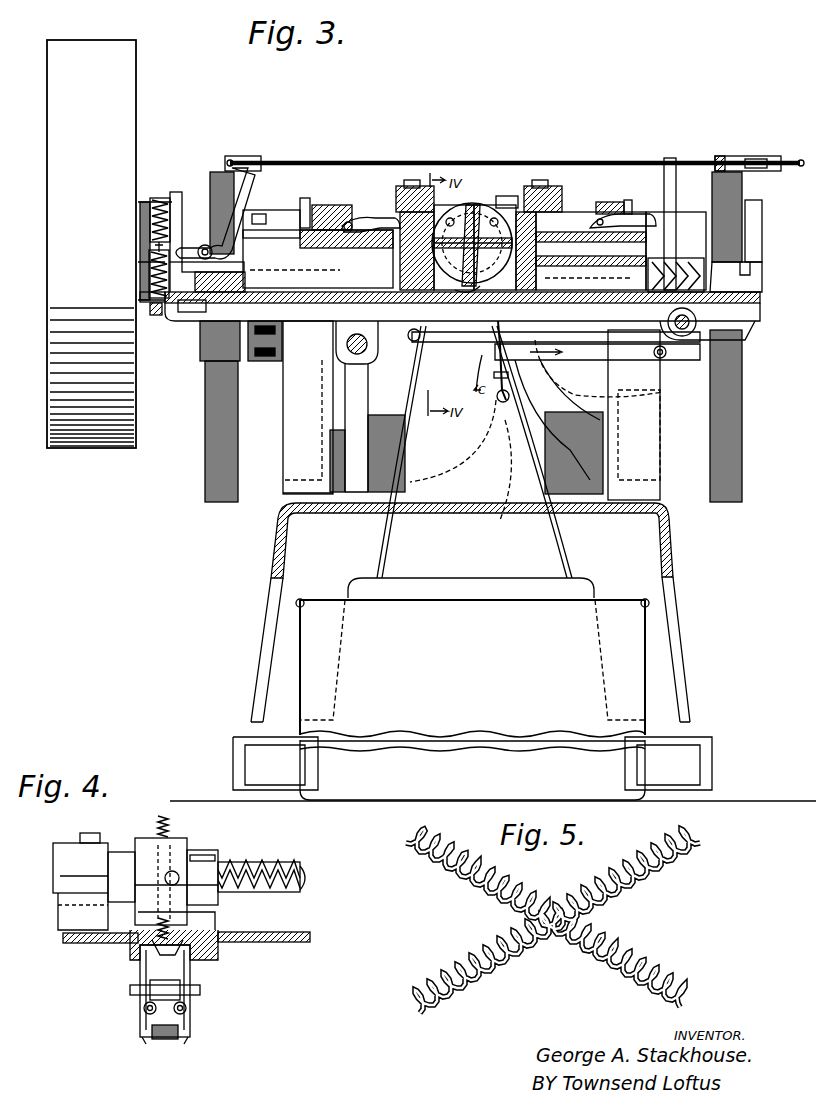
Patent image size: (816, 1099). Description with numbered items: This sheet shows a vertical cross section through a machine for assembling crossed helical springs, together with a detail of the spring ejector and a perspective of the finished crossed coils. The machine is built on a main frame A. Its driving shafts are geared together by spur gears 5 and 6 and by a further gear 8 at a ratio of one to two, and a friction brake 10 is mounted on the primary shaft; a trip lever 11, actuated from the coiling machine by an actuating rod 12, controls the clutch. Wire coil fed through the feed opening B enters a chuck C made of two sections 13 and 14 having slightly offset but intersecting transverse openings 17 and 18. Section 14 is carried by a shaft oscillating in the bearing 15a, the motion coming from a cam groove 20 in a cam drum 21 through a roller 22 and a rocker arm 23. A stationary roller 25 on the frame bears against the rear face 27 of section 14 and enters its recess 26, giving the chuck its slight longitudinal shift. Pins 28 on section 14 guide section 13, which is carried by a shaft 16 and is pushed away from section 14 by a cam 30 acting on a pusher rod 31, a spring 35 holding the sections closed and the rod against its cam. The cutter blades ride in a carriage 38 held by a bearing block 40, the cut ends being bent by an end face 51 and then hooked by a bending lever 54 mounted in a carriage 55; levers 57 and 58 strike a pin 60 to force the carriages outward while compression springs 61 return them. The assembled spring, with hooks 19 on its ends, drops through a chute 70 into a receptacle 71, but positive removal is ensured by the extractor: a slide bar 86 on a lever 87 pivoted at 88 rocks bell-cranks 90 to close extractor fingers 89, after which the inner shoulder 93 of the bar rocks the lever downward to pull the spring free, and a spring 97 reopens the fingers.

In FIG. 3, the spur gear 5 is at (208, 170).
In FIG. 3, the spur gear 6 is at (205, 470).
In FIG. 3, the gear 8 is at (742, 204).
In FIG. 3, the friction brake 10 is at (152, 205).
In FIG. 3, the trip lever 11 is at (176, 190).
In FIG. 3, the actuating rod 12 is at (380, 163).
In FIG. 4, the chuck section 13 is at (185, 888).
In FIG. 4, the chuck section 14 is at (140, 840).
In FIG. 4, the bearing 15a is at (78, 877).
In FIG. 4, the shaft 16 is at (306, 886).
In FIG. 3, the transverse opening 17 is at (500, 228).
In FIG. 4, the transverse opening 17 is at (162, 830).
In FIG. 3, the transverse opening 18 is at (482, 205).
In FIG. 4, the transverse opening 18 is at (178, 870).
In FIG. 5, the hook 19 is at (685, 990).
In FIG. 3, the cam groove 20 is at (510, 480).
In FIG. 3, the cam drum 21 is at (400, 500).
In FIG. 3, the roller 22 is at (545, 315).
In FIG. 3, the rocker arm 23 is at (478, 330).
In FIG. 4, the roller 25 is at (130, 935).
In FIG. 4, the recess 26 is at (135, 945).
In FIG. 4, the rear face 27 is at (128, 850).
In FIG. 3, the pins 28 is at (458, 205).
In FIG. 4, the pins 28 is at (205, 852).
In FIG. 3, the cam 30 is at (350, 452).
In FIG. 3, the pusher rod 31 is at (348, 352).
In FIG. 4, the spring 35 is at (298, 890).
In FIG. 3, the carriage 38 is at (372, 330).
In FIG. 3, the bearing block 40 is at (415, 188).
In FIG. 3, the end face 51 is at (621, 251).
In FIG. 3, the bending lever 54 is at (372, 210).
In FIG. 3, the carriage 55 is at (287, 261).
In FIG. 3, the lever 57 is at (312, 210).
In FIG. 3, the lever 58 is at (598, 240).
In FIG. 3, the pin 60 is at (318, 200).
In FIG. 3, the compression spring 61 is at (705, 255).
In FIG. 3, the chute 70 is at (388, 548).
In FIG. 3, the receptacle 71 is at (472, 668).
In FIG. 3, the slide bar 86 is at (640, 380).
In FIG. 4, the slide bar 86 is at (160, 1000).
In FIG. 3, the lever 87 is at (600, 350).
In FIG. 4, the lever 87 is at (192, 1006).
In FIG. 3, the pivot 88 is at (695, 330).
In FIG. 3, the extractor fingers 89 is at (470, 292).
In FIG. 4, the extractor fingers 89 is at (185, 935).
In FIG. 4, the bell-cranks 90 is at (150, 990).
In FIG. 3, the inner shoulder 93 is at (655, 395).
In FIG. 3, the spring 97 is at (505, 405).
In FIG. 4, the spring 97 is at (168, 1040).
In FIG. 3, the main frame A is at (672, 471).
In FIG. 4, the main frame A is at (26, 961).
In FIG. 3, the feed opening B is at (570, 200).
In FIG. 3, the chuck C is at (466, 200).